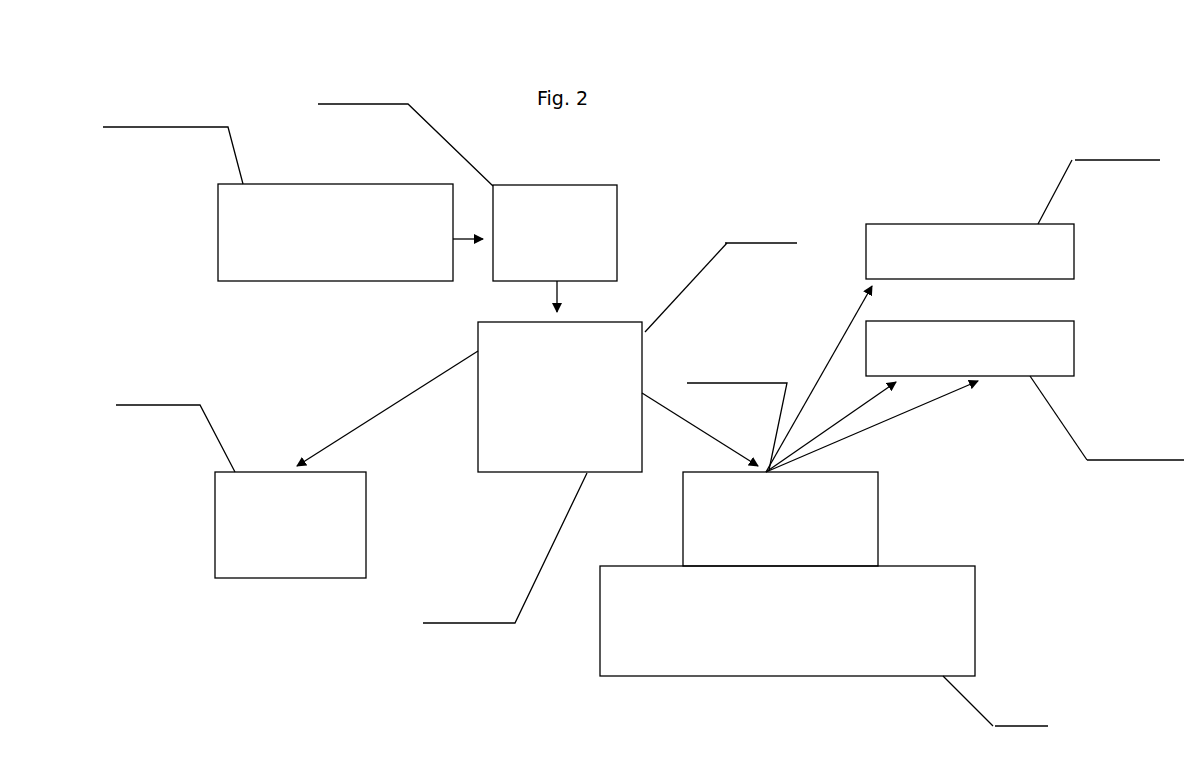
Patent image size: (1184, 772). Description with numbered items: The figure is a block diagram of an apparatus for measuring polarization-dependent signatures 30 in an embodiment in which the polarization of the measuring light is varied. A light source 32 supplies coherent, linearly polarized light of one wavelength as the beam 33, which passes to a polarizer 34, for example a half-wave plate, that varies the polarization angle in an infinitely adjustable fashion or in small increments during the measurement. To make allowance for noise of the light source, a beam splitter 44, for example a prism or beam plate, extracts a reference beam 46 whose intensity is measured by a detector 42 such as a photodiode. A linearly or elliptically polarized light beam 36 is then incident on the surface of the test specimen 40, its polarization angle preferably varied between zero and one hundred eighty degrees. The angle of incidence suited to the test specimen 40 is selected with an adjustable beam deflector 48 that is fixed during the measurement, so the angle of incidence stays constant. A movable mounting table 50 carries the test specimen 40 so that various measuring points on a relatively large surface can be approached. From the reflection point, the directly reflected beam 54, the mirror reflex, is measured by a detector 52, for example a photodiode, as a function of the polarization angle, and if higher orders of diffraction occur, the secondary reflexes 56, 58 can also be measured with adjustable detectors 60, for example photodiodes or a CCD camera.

The apparatus for measuring polarization-dependent signatures 30 is at (402, 660).
The light source 32 is at (372, 281).
The beam 33 is at (455, 238).
The polarizer 34 is at (617, 243).
The light beam 36 is at (724, 452).
The test specimen 40 is at (683, 488).
The detector 42 is at (366, 541).
The beam splitter 44 is at (642, 360).
The reference beam 46 is at (352, 430).
The beam deflector 48 is at (520, 473).
The mounting table 50 is at (975, 620).
The detector 52 is at (990, 224).
The directly reflected beam 54 is at (844, 338).
The secondary reflex 56 is at (825, 428).
The secondary reflex 58 is at (905, 416).
The adjustable detectors 60 is at (1003, 377).